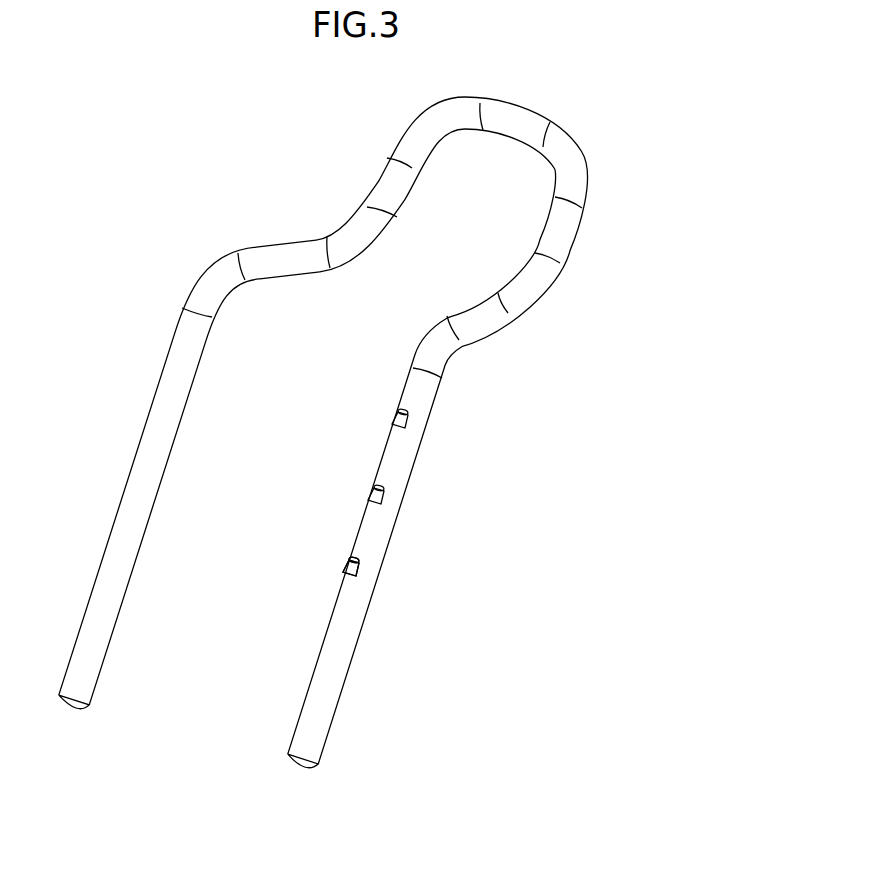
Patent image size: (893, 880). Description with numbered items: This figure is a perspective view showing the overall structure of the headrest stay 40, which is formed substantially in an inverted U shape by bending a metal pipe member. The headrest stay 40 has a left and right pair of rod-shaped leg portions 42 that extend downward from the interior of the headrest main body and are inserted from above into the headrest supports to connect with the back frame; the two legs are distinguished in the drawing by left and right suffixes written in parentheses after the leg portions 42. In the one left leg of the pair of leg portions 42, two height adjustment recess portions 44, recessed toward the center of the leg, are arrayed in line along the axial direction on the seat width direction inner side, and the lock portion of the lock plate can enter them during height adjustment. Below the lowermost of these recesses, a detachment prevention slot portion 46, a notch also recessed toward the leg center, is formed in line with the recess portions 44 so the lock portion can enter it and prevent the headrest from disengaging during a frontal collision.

The headrest stay 40 is at (675, 115).
The leg portions 42 is at (180, 452).
The height adjustment recess portions 44 is at (387, 412).
The detachment prevention slot portion 46 is at (348, 565).